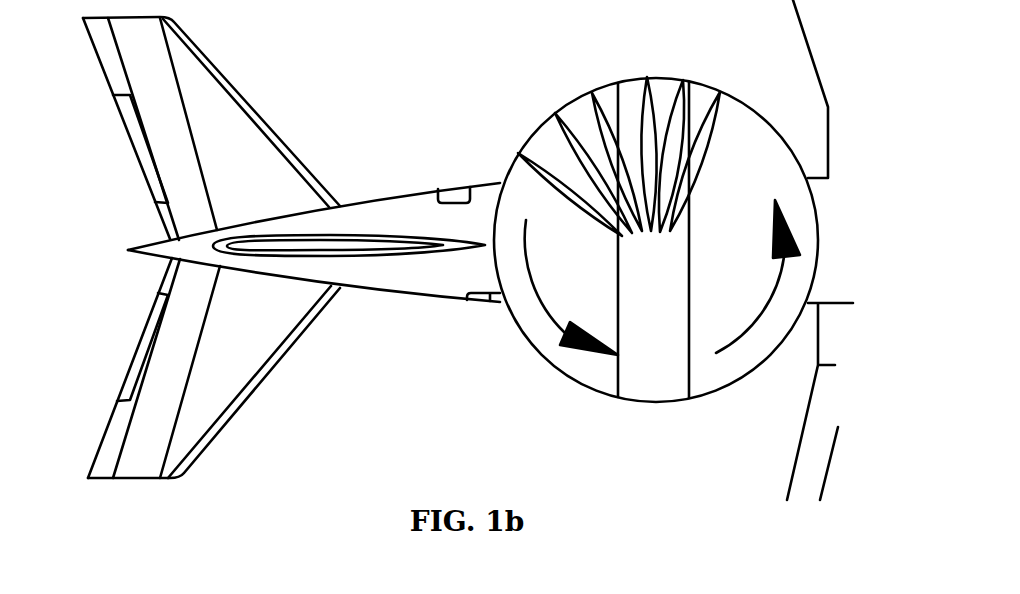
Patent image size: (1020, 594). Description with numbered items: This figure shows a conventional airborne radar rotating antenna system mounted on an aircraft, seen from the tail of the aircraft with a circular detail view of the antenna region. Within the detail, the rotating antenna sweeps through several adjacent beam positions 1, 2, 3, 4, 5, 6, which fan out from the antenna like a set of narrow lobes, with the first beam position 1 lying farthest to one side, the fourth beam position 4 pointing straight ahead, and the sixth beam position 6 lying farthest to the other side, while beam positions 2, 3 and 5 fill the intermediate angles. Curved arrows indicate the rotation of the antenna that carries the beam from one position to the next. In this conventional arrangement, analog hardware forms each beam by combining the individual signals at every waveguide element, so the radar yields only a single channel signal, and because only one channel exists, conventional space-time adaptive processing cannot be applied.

The beam position 1 is at (555, 175).
The beam position 2 is at (582, 151).
The beam position 3 is at (609, 139).
The beam position 4 is at (644, 133).
The beam position 5 is at (677, 136).
The beam position 6 is at (704, 140).